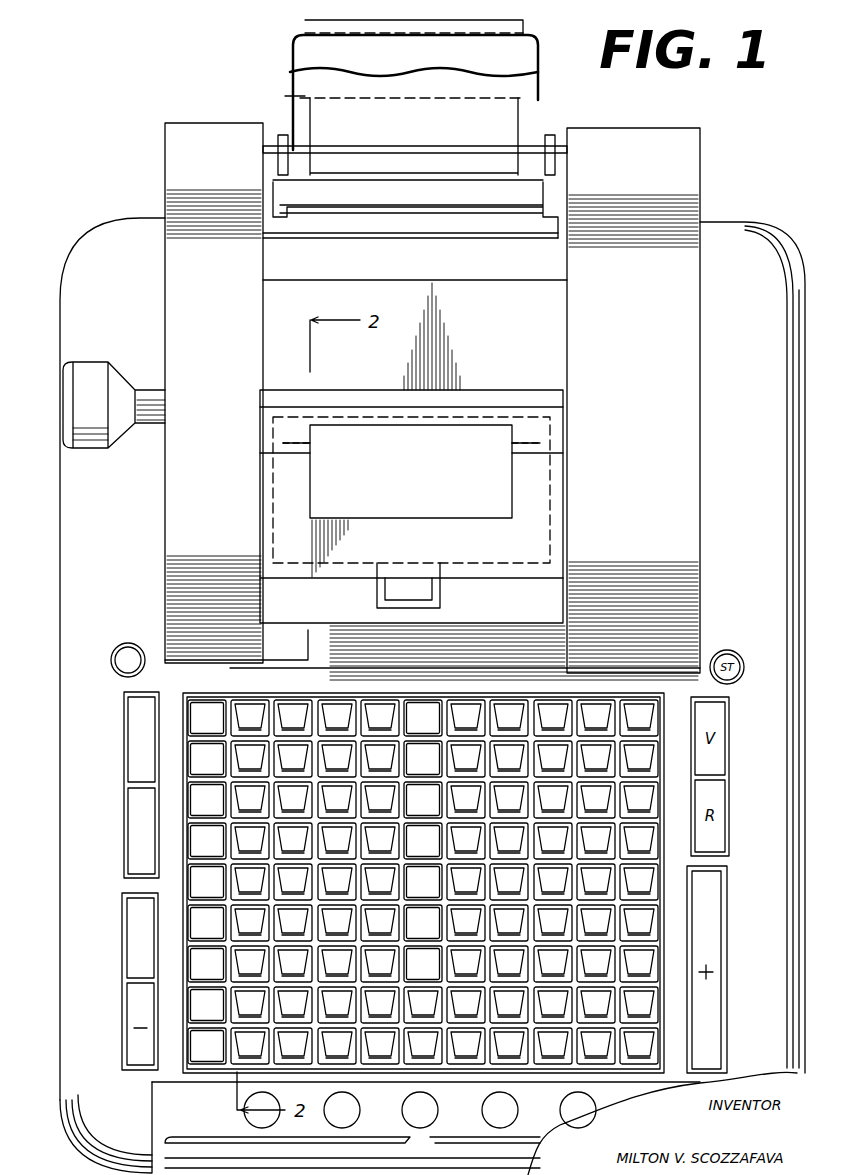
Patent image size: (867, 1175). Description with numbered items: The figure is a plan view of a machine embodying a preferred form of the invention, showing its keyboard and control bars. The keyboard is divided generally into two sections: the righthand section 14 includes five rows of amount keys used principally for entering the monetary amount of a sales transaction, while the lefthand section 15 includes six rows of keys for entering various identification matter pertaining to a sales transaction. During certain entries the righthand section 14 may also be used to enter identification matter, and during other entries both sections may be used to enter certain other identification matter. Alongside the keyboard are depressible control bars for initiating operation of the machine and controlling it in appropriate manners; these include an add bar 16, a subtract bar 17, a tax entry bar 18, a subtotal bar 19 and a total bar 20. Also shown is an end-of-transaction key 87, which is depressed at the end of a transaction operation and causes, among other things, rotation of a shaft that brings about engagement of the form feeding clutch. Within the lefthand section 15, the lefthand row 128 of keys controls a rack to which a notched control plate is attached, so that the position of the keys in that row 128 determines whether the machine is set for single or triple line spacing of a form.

The righthand keyboard section 14 is at (448, 690).
The lefthand keyboard section 15 is at (185, 690).
The add bar 16 is at (708, 940).
The subtract bar 17 is at (133, 1010).
The tax entry bar 18 is at (133, 918).
The subtotal bar 19 is at (130, 820).
The total bar 20 is at (111, 767).
The end-of-transaction key 87 is at (131, 643).
The lefthand row of keys 128 is at (144, 718).